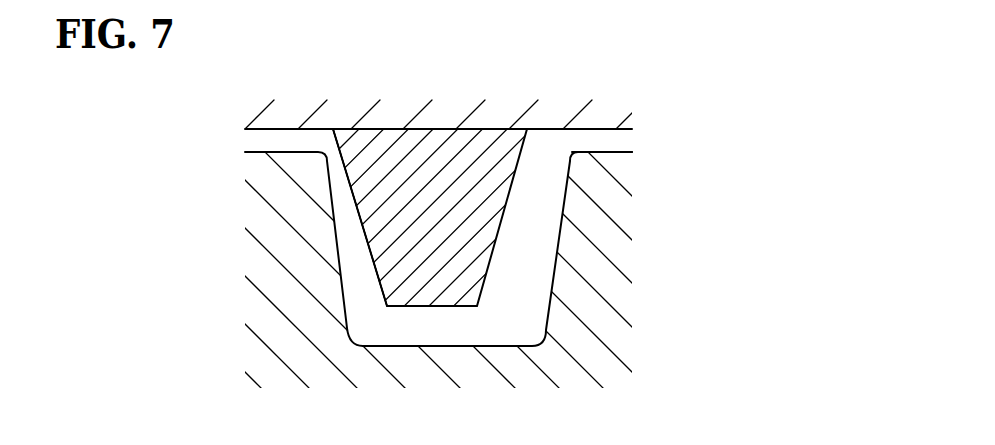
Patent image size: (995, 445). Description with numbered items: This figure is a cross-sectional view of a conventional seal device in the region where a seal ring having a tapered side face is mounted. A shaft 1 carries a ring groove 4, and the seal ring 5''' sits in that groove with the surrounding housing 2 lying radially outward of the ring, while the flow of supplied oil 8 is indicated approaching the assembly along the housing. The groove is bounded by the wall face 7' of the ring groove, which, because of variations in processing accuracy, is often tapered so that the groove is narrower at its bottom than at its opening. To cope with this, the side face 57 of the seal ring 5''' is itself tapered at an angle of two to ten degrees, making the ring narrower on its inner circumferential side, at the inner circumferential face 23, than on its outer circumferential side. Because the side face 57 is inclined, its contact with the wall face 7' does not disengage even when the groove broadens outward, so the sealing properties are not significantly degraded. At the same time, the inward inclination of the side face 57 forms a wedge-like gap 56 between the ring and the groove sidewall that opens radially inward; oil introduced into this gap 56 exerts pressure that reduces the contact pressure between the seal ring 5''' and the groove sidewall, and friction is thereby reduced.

The shaft 1 is at (645, 265).
The housing 2 is at (555, 117).
The ring groove 4 is at (485, 346).
The seal ring 5''' is at (406, 174).
The wall face of the ring groove 7' is at (399, 249).
The flow of supplied oil 8 is at (613, 142).
The inner circumferential face 23 is at (437, 307).
The wedge-like gap 56 is at (367, 297).
The side face 57 is at (369, 249).